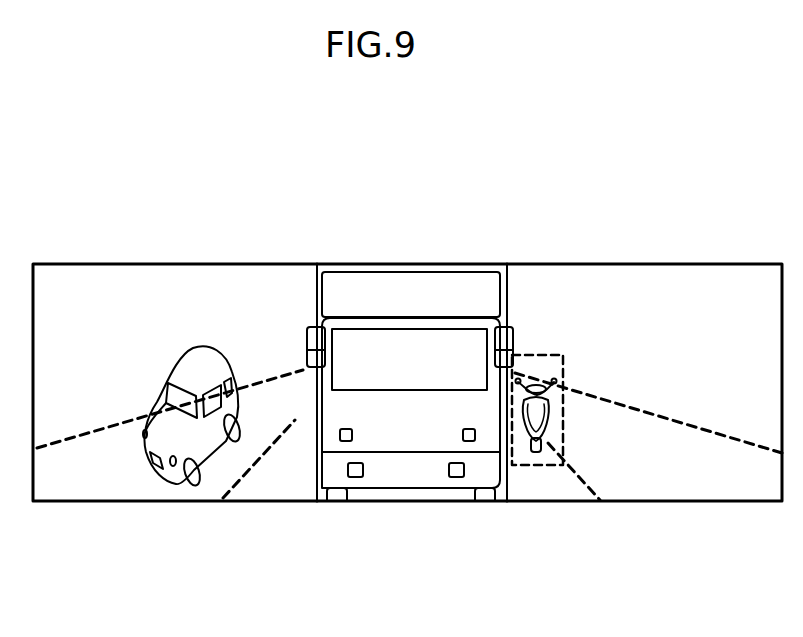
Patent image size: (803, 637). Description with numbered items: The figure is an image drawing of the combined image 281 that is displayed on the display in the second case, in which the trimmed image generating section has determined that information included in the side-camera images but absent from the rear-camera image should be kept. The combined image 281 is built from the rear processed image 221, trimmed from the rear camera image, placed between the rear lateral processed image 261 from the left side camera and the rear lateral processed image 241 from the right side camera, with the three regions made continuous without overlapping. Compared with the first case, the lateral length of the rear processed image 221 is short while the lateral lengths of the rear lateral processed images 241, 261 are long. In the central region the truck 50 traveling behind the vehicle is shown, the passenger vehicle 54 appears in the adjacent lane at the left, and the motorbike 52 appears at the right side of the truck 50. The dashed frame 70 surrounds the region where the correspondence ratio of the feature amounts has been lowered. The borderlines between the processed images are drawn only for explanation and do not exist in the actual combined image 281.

The rear lateral processed image 261 is at (125, 282).
The rear lateral processed image 241 is at (687, 281).
The rear processed image 221 is at (378, 271).
The truck 50 is at (447, 286).
The passenger vehicle 54 is at (186, 364).
The dashed frame 70 is at (548, 355).
The motorbike 52 is at (546, 410).
The combined image 281 is at (257, 518).